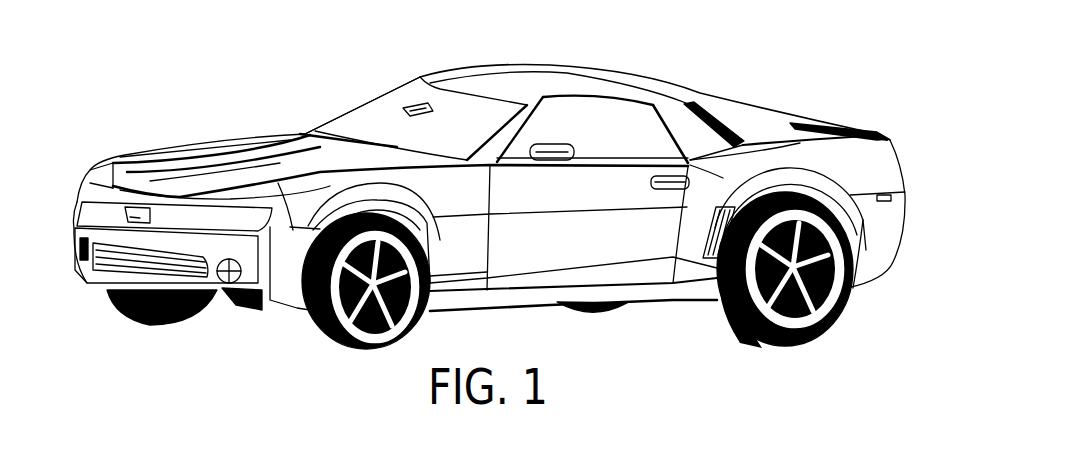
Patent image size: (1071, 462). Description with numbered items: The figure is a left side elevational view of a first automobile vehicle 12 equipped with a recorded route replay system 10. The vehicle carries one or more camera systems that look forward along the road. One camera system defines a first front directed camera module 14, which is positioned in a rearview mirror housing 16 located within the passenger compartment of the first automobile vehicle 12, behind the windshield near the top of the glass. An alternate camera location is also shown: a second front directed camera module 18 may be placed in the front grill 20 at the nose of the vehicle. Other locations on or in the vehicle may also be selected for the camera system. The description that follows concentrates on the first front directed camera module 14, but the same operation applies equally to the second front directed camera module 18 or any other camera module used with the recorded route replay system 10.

The recorded route replay system 10 is at (753, 72).
The first automobile vehicle 12 is at (886, 204).
The first front directed camera module 14 is at (403, 105).
The rearview mirror housing 16 is at (427, 100).
The second front directed camera module 18 is at (127, 220).
The front grill 20 is at (122, 202).